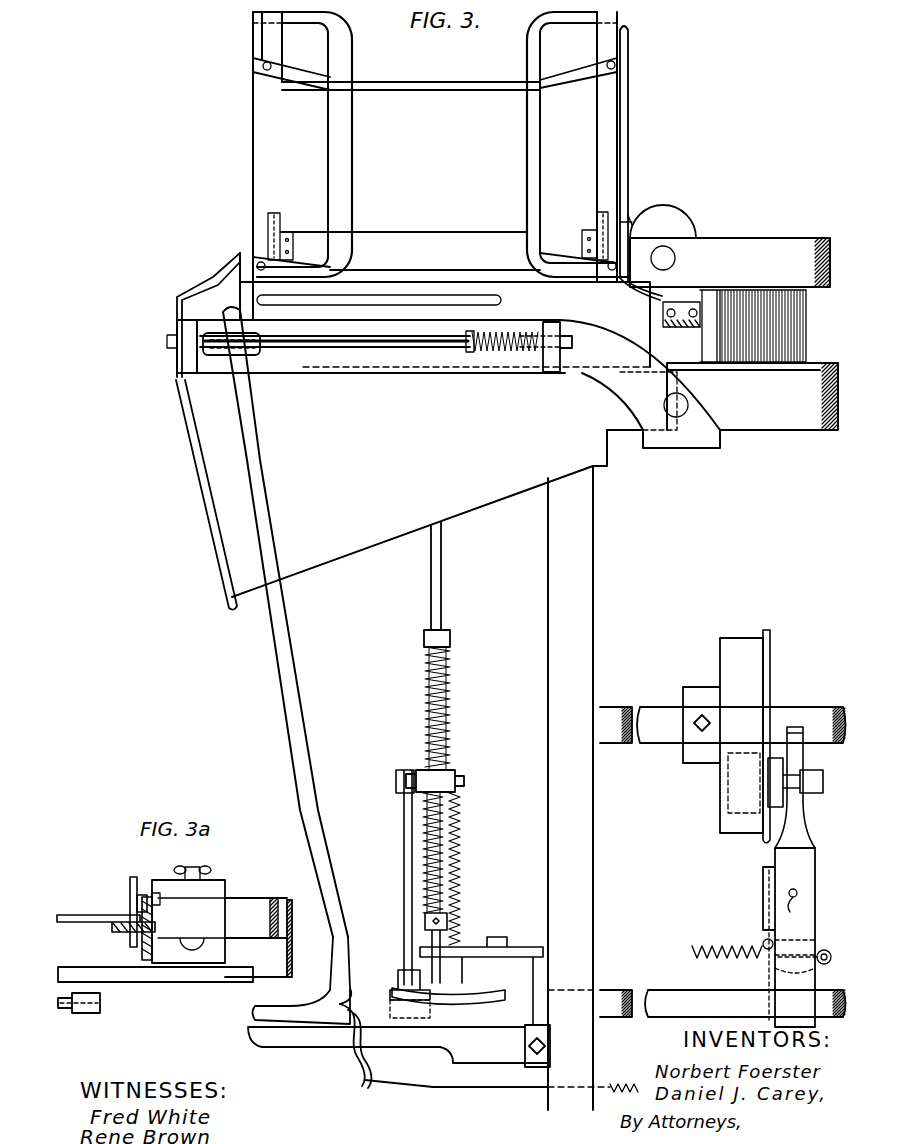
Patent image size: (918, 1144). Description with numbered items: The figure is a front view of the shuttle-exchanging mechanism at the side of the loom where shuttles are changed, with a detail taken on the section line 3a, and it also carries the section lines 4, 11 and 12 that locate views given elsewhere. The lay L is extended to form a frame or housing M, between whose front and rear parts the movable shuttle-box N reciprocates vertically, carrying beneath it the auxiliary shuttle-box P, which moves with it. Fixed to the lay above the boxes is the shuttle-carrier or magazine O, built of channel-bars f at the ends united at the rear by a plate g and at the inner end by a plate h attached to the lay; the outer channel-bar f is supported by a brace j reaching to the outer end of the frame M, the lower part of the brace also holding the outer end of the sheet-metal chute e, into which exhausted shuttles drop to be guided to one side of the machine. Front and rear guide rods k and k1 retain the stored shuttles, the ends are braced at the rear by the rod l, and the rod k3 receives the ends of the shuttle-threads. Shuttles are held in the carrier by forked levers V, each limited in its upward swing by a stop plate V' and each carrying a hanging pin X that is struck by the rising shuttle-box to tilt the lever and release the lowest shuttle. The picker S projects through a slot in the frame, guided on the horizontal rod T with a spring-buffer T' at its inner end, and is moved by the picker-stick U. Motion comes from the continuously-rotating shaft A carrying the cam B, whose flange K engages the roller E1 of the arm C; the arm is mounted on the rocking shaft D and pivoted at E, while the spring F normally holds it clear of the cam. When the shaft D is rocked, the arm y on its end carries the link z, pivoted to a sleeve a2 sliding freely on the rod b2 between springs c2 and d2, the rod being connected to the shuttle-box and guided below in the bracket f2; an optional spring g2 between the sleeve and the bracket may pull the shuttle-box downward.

In FIG. 3, the guide rod k is at (352, 170).
In FIG. 3, the guide rod k1 is at (340, 62).
In FIG. 3, the rod k3 is at (612, 62).
In FIG. 3, the rod l is at (462, 80).
In FIG. 3, the plate g is at (411, 251).
In FIG. 3, the channel-bar f is at (612, 35).
In FIG. 3, the shuttle-carrier O is at (622, 120).
In FIG. 3, the forked lever V is at (585, 231).
In FIG. 3a, the forked lever V is at (106, 903).
In FIG. 3a, the plate V' is at (119, 897).
In FIG. 3a, the pin X is at (144, 895).
In FIG. 3, the plate h is at (632, 222).
In FIG. 3a, the plate h is at (162, 893).
In FIG. 3, the brace j is at (220, 282).
In FIG. 3, the movable shuttle-box N is at (445, 324).
In FIG. 3, the auxiliary shuttle-box P is at (478, 375).
In FIG. 3, the horizontal rod T is at (352, 371).
In FIG. 3, the spring-buffer T' is at (562, 347).
In FIG. 3, the picker S is at (248, 356).
In FIG. 3, the frame M is at (610, 378).
In FIG. 3a, the frame M is at (185, 983).
In FIG. 3, the lay L is at (729, 334).
In FIG. 3a, the lay L is at (222, 921).
In FIG. 3, the chute e is at (409, 745).
In FIG. 3, the picker-stick U is at (292, 740).
In FIG. 3, the arm y is at (385, 990).
In FIG. 3, the rod b2 is at (442, 570).
In FIG. 3, the spring c2 is at (452, 680).
In FIG. 3, the sleeve a2 is at (450, 780).
In FIG. 3, the spring d2 is at (446, 830).
In FIG. 3, the spring g2 is at (462, 862).
In FIG. 3, the link z is at (404, 857).
In FIG. 3, the bracket f2 is at (460, 950).
In FIG. 3, the shaft A is at (815, 712).
In FIG. 3, the cam B is at (730, 663).
In FIG. 3, the flange K is at (762, 838).
In FIG. 3, the roller E1 is at (728, 790).
In FIG. 3, the arm C is at (812, 818).
In FIG. 3, the pivot E is at (797, 937).
In FIG. 3, the spring F is at (728, 930).
In FIG. 3, the rocking shaft D is at (665, 1020).
In FIG. 3, the section line 11 is at (175, 342).
In FIG. 3, the section line 12 is at (250, 205).
In FIG. 3, the section line 4 is at (400, 115).
In FIG. 3, the section line 3a is at (555, 172).